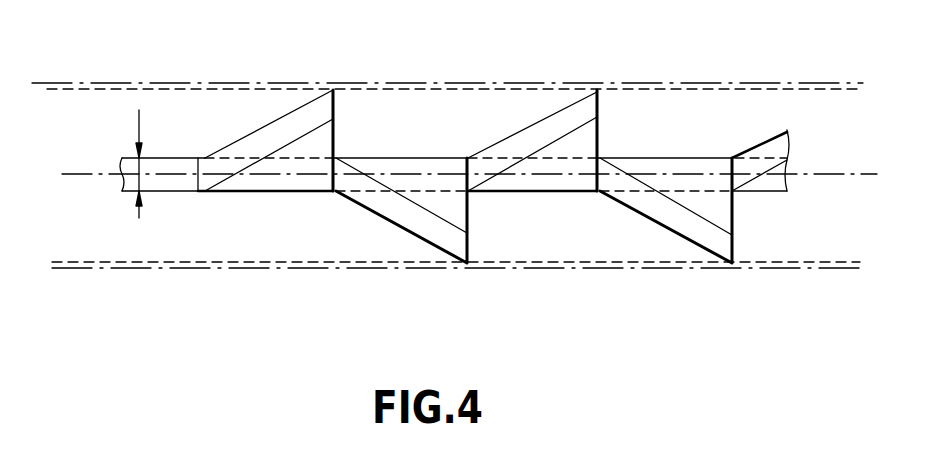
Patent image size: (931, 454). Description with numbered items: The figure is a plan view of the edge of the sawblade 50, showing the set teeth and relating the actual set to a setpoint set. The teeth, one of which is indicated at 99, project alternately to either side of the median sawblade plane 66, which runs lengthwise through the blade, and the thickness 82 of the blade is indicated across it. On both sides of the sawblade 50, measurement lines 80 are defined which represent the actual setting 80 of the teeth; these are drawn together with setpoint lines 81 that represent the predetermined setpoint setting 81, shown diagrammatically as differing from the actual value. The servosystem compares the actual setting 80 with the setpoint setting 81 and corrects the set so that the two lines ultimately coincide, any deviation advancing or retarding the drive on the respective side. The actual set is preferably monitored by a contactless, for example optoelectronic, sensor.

The sawblade 50 is at (668, 167).
The median sawblade plane 66 is at (273, 175).
The flight segment 99 is at (525, 142).
The actual setting 80 is at (392, 89).
The setpoint setting 81 is at (288, 83).
The thickness 82 is at (139, 148).